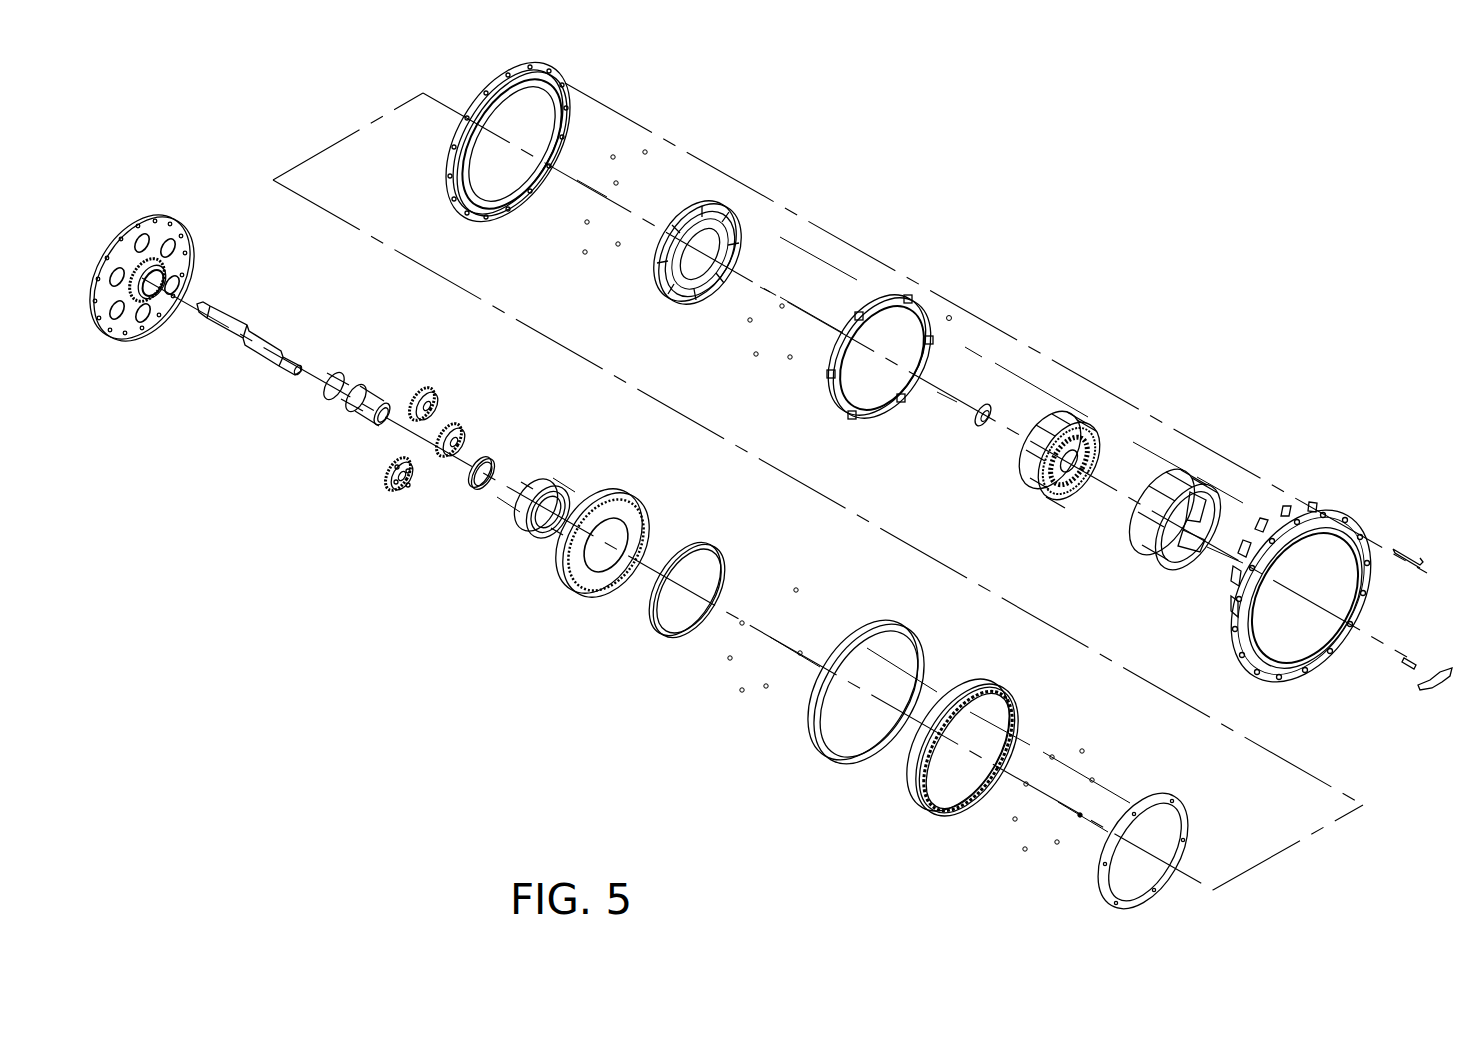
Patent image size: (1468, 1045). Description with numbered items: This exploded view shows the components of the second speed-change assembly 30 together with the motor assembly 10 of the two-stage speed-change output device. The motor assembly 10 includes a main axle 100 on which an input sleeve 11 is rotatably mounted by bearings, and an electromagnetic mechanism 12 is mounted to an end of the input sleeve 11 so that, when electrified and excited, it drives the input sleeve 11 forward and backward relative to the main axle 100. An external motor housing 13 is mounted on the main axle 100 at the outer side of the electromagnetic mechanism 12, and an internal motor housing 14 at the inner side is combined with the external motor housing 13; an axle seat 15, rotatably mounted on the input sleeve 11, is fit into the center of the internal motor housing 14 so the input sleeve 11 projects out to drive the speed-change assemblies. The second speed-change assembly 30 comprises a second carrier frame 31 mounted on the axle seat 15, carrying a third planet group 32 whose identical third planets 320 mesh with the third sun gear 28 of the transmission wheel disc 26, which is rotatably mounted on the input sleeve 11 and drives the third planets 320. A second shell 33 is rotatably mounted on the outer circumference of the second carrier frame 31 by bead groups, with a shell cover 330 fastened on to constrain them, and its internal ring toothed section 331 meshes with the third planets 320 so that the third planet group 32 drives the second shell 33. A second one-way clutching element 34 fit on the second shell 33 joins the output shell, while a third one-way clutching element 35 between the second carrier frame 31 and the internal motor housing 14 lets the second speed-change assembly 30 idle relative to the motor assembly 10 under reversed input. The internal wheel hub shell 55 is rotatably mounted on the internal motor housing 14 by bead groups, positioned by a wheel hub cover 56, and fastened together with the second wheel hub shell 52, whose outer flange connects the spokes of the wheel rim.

The motor assembly 10 is at (1208, 335).
The input sleeve 11 is at (340, 410).
The electromagnetic mechanism 12 is at (1065, 420).
The external motor housing 13 is at (1183, 478).
The internal motor housing 14 is at (720, 205).
The axle seat 15 is at (529, 527).
The transmission wheel disc 26 is at (105, 336).
The third sun gear 28 is at (130, 293).
The second speed-change assembly 30 is at (348, 548).
The second carrier frame 31 is at (588, 585).
The third planet group 32 is at (434, 500).
The second shell 33 is at (961, 777).
The second one-way clutching element 34 is at (815, 740).
The third one-way clutching element 35 is at (657, 624).
The second wheel hub shell 52 is at (1343, 512).
The internal wheel hub shell 55 is at (568, 86).
The wheel hub cover 56 is at (906, 297).
The main axle 100 is at (253, 345).
The third planets 320 is at (387, 490).
The shell cover 330 is at (1107, 873).
The internal ring toothed section 331 is at (938, 800).